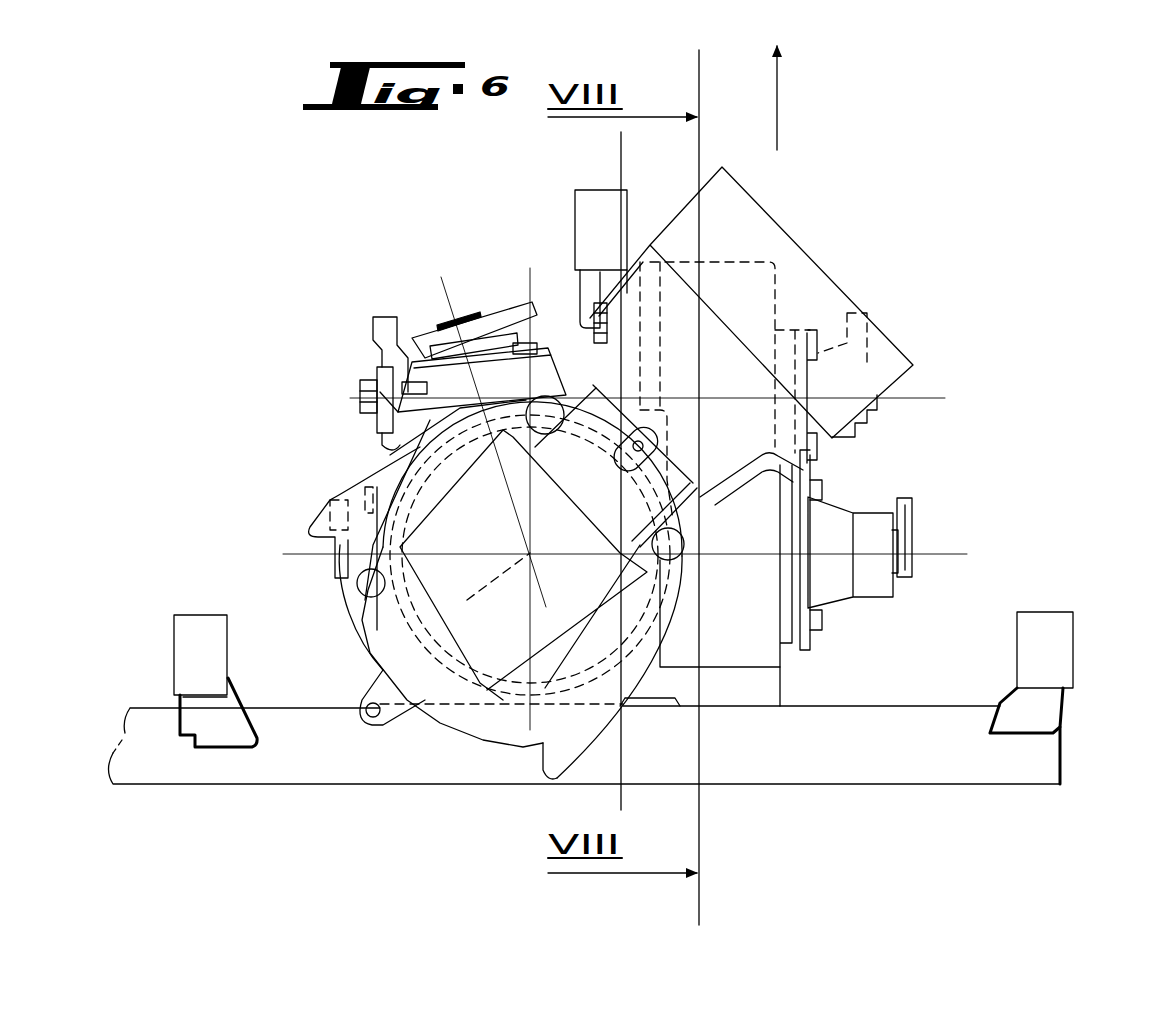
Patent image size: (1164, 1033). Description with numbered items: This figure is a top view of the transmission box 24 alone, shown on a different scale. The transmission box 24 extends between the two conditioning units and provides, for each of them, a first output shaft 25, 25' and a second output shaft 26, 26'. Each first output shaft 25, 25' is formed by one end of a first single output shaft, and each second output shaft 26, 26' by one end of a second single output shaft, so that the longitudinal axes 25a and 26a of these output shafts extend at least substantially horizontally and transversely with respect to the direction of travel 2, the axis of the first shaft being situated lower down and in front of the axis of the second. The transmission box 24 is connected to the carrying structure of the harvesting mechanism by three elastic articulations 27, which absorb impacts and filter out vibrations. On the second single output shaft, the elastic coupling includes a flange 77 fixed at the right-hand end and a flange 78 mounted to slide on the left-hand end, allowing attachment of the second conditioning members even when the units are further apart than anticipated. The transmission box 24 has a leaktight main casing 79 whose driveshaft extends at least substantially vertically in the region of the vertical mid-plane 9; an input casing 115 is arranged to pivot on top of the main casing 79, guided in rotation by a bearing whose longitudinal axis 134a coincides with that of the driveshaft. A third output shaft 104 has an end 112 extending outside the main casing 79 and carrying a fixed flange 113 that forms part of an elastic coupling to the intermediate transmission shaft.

The direction of travel 2 is at (778, 108).
The vertical mid-plane 9 is at (621, 141).
The transmission box 24 is at (481, 742).
The first output shaft 25 is at (741, 357).
The first output shaft 25' is at (333, 378).
The longitudinal axis 25a is at (927, 393).
The second output shaft 26 is at (894, 537).
The second output shaft 26' is at (274, 487).
The longitudinal axis 26a is at (940, 548).
The elastic articulation 27 is at (595, 212).
The flange 77 is at (903, 580).
The flange 78 is at (335, 580).
The main casing 79 is at (767, 648).
The third output shaft 104 is at (468, 320).
The end of the third output shaft 112 is at (440, 315).
The flange 113 is at (506, 312).
The input casing 115 is at (580, 728).
The longitudinal axis 134a is at (407, 595).